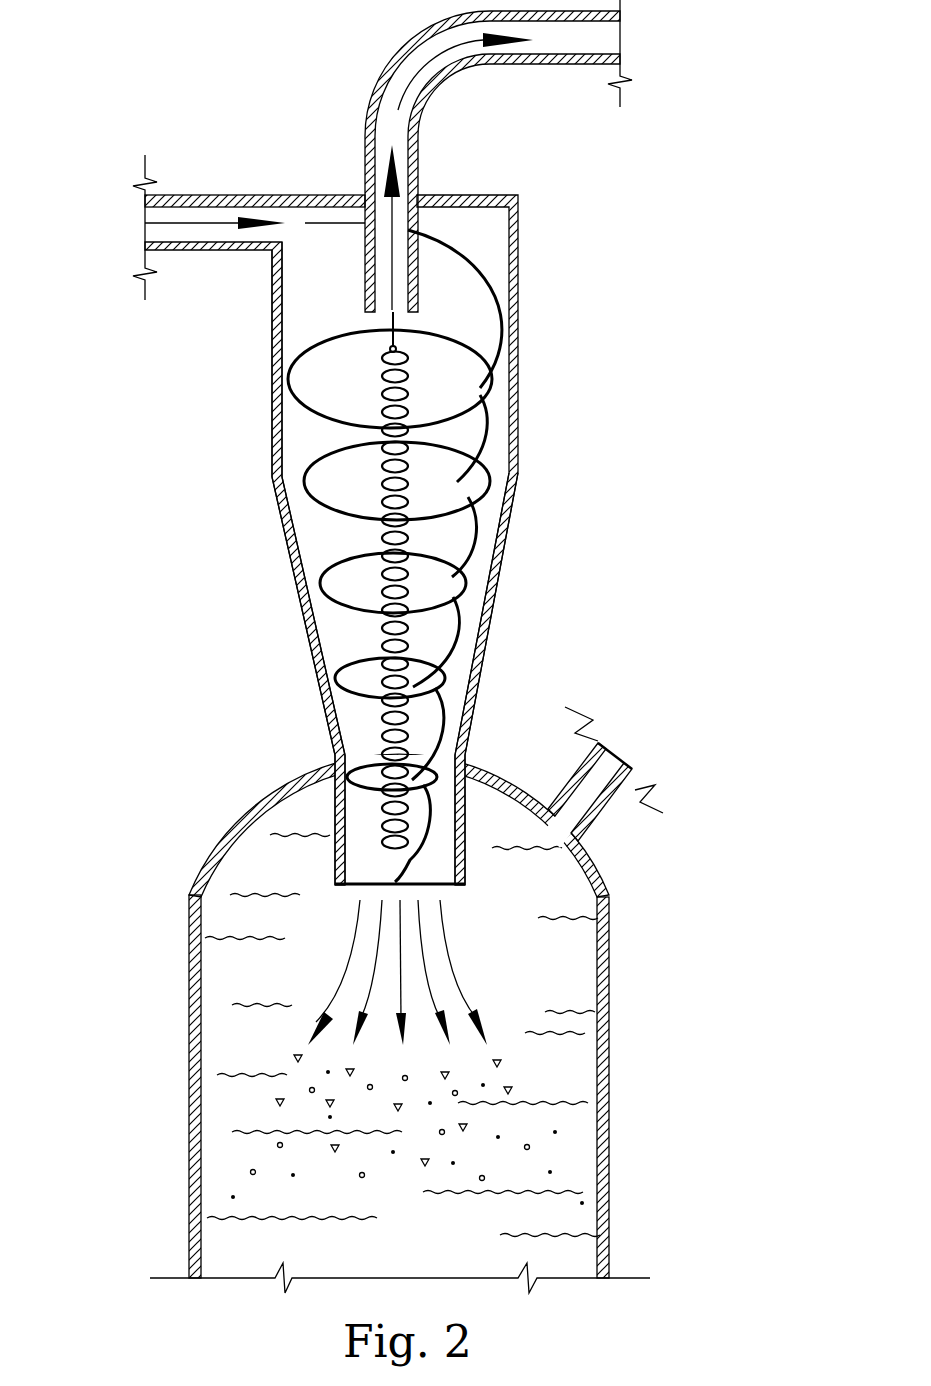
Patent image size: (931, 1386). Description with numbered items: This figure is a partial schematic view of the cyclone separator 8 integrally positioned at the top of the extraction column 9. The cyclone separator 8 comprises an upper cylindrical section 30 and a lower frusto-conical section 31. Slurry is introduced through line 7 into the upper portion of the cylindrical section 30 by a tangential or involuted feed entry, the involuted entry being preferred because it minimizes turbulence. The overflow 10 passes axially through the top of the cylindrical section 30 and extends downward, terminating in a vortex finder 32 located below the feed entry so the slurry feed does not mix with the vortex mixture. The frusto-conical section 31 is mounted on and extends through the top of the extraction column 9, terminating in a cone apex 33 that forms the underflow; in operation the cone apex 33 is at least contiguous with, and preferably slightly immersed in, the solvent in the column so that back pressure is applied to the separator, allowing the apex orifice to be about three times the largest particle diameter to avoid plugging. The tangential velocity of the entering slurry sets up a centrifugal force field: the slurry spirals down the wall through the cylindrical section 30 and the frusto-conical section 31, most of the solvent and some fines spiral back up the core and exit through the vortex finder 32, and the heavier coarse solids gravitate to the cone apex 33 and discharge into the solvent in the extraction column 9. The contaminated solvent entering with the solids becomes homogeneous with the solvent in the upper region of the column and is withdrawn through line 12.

The line 7 is at (192, 197).
The cyclone separator 8 is at (532, 233).
The extraction column 9 is at (626, 1116).
The overflow 10 is at (372, 112).
The line 12 is at (613, 808).
The upper cylindrical section 30 is at (270, 340).
The lower frusto-conical section 31 is at (488, 605).
The vortex finder 32 is at (370, 312).
The cone apex 33 is at (335, 877).